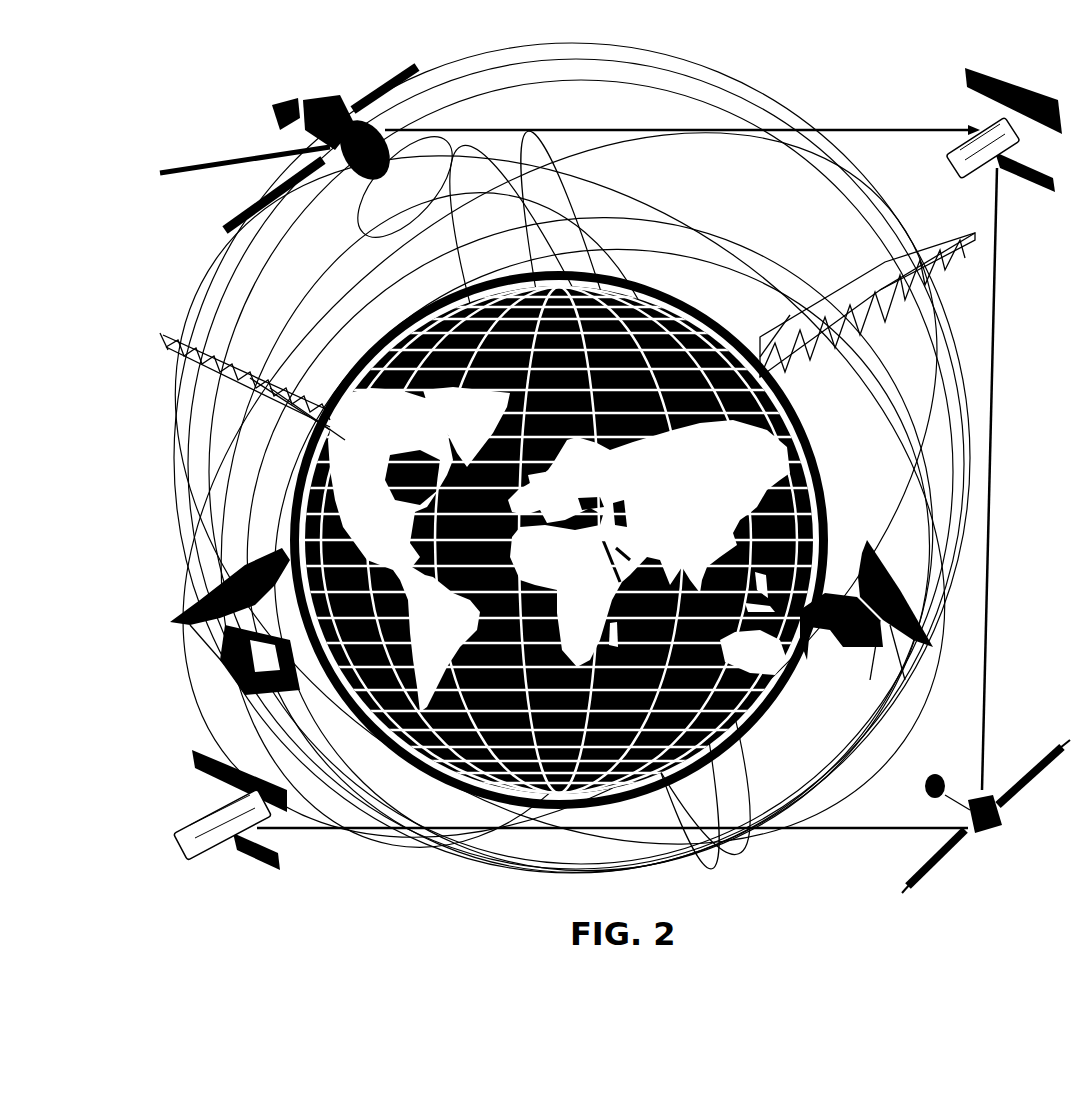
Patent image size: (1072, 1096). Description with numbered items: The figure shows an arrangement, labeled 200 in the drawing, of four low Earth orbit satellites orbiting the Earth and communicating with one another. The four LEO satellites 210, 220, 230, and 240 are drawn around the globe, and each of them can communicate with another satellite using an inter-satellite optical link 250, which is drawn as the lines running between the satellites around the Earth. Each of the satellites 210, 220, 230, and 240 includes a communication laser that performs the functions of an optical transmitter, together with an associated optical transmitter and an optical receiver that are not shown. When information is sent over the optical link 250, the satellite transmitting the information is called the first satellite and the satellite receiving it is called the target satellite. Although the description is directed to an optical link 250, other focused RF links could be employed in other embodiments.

The satellite communication system 200 is at (106, 52).
The LEO satellite 210 is at (195, 856).
The LEO satellite 220 is at (993, 835).
The LEO satellite 230 is at (1031, 87).
The LEO satellite 240 is at (298, 105).
The inter-satellite optical link 250 is at (798, 127).